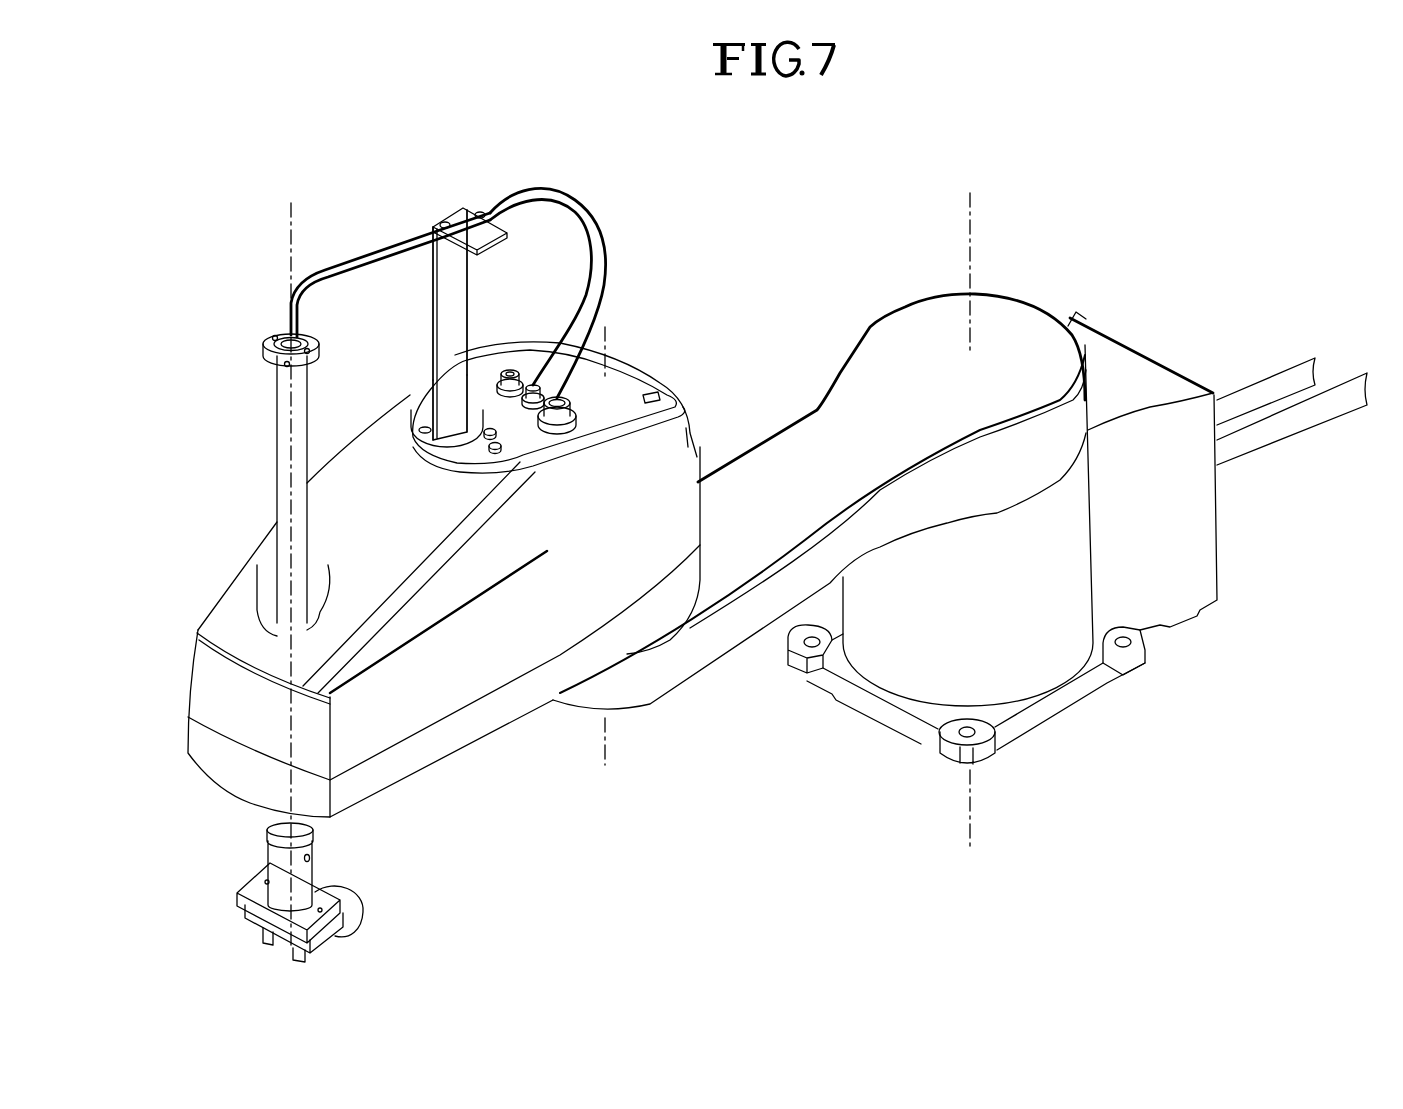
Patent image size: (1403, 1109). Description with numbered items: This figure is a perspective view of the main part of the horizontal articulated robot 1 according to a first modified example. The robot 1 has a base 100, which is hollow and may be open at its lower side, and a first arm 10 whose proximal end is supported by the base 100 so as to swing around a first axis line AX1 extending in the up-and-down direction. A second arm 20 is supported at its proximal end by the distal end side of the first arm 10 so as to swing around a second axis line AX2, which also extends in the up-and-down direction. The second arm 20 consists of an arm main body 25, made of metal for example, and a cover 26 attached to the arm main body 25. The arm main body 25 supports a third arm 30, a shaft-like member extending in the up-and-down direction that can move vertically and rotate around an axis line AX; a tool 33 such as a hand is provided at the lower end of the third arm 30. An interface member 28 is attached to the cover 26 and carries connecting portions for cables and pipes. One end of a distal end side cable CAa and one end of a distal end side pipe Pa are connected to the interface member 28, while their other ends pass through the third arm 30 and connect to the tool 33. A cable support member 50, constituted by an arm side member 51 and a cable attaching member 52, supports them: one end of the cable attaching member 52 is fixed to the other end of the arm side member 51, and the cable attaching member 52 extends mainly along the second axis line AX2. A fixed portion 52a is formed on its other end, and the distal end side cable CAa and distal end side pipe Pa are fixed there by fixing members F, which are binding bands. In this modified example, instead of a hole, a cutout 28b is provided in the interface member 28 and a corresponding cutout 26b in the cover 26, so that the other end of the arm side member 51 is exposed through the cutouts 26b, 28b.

The horizontal articulated robot 1 is at (1162, 348).
The first arm 10 is at (756, 452).
The second arm 20 is at (238, 574).
The arm main body 25 is at (470, 732).
The cover 26 is at (262, 527).
The cutout 26b is at (433, 448).
The interface member 28 is at (490, 357).
The cutout 28b is at (490, 442).
The third arm 30 is at (268, 406).
The tool 33 is at (237, 897).
The cable support member 50 is at (432, 303).
The arm side member 51 is at (437, 406).
The cable attaching member 52 is at (433, 342).
The fixed portion 52a is at (492, 245).
The fixing members F is at (470, 218).
The distal end side cable CAa is at (498, 256).
The distal end side pipe Pa is at (607, 275).
The base 100 is at (1033, 660).
The axis line AX is at (291, 230).
The first axis line AX1 is at (972, 238).
The second axis line AX2 is at (607, 728).